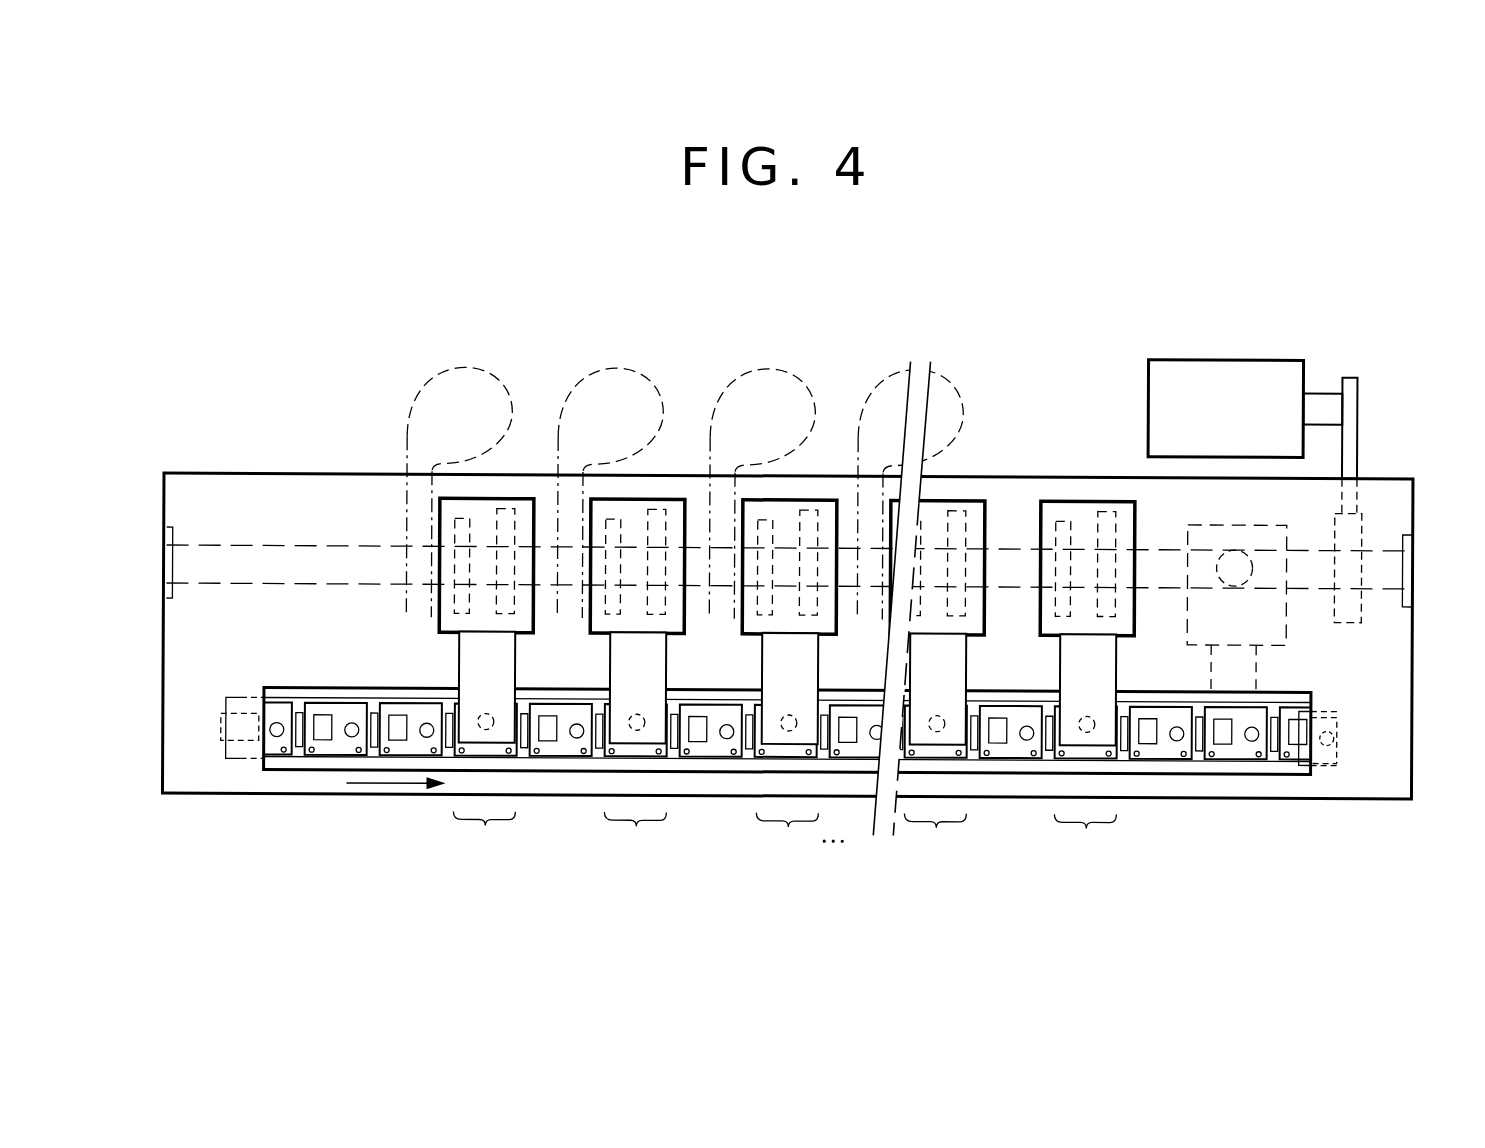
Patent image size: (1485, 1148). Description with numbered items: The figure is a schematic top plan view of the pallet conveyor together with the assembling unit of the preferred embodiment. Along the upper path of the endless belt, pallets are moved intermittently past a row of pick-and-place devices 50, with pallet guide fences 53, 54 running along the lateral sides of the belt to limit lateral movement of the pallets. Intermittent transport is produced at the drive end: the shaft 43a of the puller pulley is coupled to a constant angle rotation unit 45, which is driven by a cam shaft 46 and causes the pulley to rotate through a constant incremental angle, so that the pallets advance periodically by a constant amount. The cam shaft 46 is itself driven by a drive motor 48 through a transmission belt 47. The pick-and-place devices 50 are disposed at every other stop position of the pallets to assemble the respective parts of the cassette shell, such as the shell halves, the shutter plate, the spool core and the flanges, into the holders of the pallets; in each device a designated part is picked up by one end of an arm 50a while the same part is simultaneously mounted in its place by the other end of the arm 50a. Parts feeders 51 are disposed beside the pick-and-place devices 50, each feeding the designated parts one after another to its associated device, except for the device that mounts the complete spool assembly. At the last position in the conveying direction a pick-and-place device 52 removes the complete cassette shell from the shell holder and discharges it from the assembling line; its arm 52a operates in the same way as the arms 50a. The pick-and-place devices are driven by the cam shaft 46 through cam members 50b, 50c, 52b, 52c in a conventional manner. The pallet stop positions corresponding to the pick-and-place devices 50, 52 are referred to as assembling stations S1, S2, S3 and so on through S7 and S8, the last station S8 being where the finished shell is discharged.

The shaft 43a is at (1258, 652).
The constant angle rotation unit 45 is at (1288, 620).
The cam shaft 46 is at (1383, 546).
The transmission belt 47 is at (1357, 425).
The drive motor 48 is at (1253, 355).
The pick-and-place device 50 is at (523, 497).
The arm 50a is at (487, 712).
The cam member 50b is at (497, 607).
The cam member 50c is at (457, 592).
The parts feeder 51 is at (465, 365).
The pick-and-place device 52 is at (1115, 497).
The arm 52a is at (1092, 708).
The cam member 52b is at (1065, 517).
The cam member 52c is at (1100, 507).
The pallet guide fence 53 is at (680, 687).
The pallet guide fence 54 is at (335, 769).
The assembling station S1 is at (484, 834).
The assembling station S2 is at (635, 835).
The assembling station S3 is at (800, 836).
The assembling station S7 is at (935, 837).
The assembling station S8 is at (1085, 837).